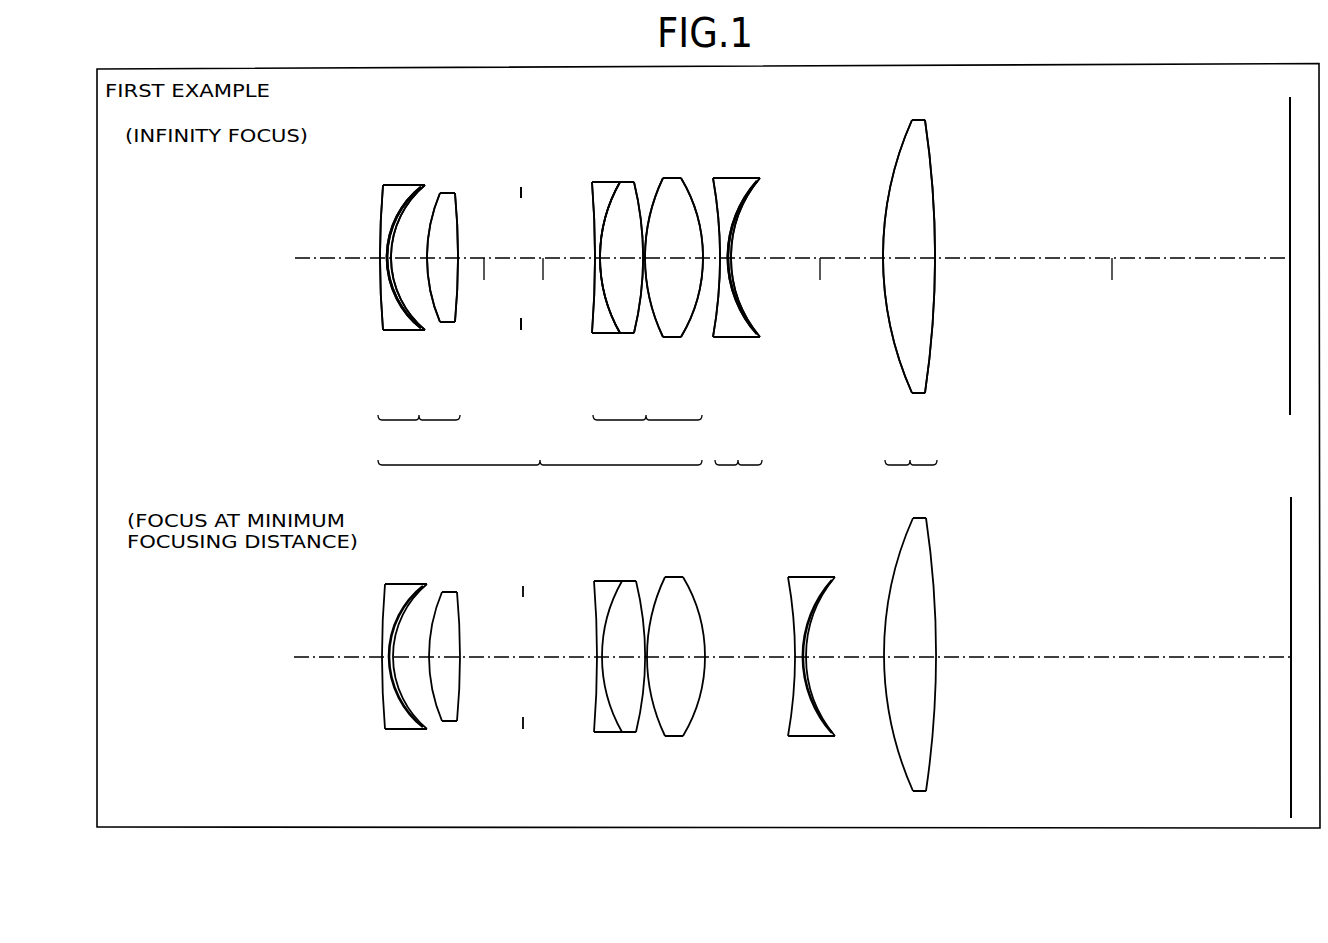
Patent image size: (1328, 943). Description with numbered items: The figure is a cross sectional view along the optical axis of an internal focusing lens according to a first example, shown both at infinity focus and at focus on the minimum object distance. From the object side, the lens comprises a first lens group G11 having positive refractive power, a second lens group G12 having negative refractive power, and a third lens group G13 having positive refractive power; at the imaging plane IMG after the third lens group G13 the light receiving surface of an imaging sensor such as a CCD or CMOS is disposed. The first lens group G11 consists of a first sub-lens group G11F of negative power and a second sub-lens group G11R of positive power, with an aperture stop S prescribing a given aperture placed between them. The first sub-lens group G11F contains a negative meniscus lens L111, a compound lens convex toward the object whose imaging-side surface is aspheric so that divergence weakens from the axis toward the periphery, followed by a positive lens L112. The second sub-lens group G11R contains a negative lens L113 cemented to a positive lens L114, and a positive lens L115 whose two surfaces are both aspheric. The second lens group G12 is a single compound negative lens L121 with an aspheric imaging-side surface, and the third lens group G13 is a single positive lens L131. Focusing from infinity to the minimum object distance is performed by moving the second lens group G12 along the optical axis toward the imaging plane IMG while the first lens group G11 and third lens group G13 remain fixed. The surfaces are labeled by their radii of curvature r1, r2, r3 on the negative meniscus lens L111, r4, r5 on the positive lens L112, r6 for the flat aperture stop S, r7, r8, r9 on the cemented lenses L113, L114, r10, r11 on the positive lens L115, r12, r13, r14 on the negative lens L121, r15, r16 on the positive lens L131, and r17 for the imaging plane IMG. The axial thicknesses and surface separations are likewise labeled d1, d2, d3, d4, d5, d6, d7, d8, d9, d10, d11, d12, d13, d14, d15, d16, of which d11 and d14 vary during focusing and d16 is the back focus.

The negative meniscus lens L111 is at (397, 195).
The positive lens L112 is at (453, 200).
The negative lens L113 is at (603, 192).
The positive lens L114 is at (622, 202).
The positive lens L115 is at (675, 192).
The negative lens L121 is at (732, 188).
The positive lens L131 is at (918, 133).
The aperture stop S is at (522, 187).
The imaging plane IMG is at (1290, 383).
The first sub-lens group G11F is at (419, 436).
The second sub-lens group G11R is at (647, 436).
The first lens group G11 is at (540, 481).
The second lens group G12 is at (738, 480).
The third lens group G13 is at (911, 480).
The radius of curvature r1 is at (380, 232).
The radius of curvature r2 is at (395, 225).
The radius of curvature r3 is at (392, 242).
The radius of curvature r4 is at (436, 203).
The radius of curvature r5 is at (458, 232).
The radius of curvature r6 is at (520, 193).
The radius of curvature r7 is at (595, 232).
The radius of curvature r8 is at (612, 208).
The radius of curvature r9 is at (640, 188).
The radius of curvature r10 is at (657, 185).
The radius of curvature r11 is at (689, 183).
The radius of curvature r12 is at (713, 187).
The radius of curvature r13 is at (757, 180).
The radius of curvature r14 is at (737, 224).
The radius of curvature r15 is at (890, 178).
The radius of curvature r16 is at (933, 167).
The radius of curvature r17 is at (1290, 132).
The thickness d1 is at (382, 262).
The thickness d2 is at (385, 267).
The distance between surfaces d3 is at (412, 262).
The thickness d4 is at (445, 262).
The distance between surfaces d5 is at (486, 283).
The distance between surfaces d6 is at (544, 283).
The thickness d7 is at (597, 267).
The thickness d8 is at (623, 262).
The distance between surfaces d9 is at (647, 262).
The thickness d10 is at (670, 262).
The distance between surfaces d11 is at (708, 263).
The thickness d12 is at (720, 262).
The thickness d13 is at (735, 263).
The distance between surfaces d14 is at (818, 284).
The thickness d15 is at (910, 258).
The distance between surfaces d16 is at (1110, 284).